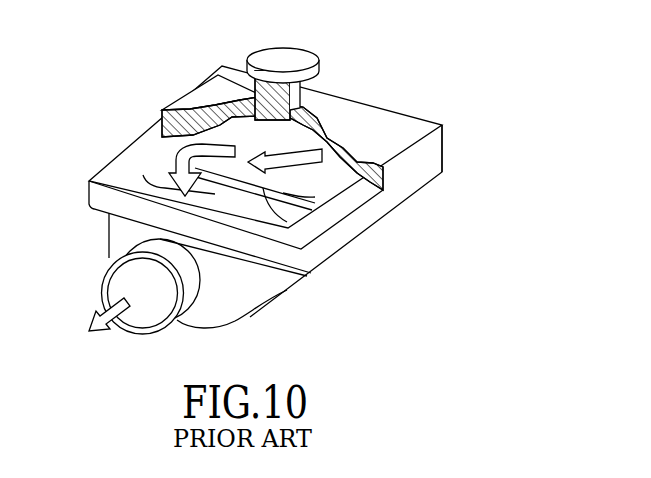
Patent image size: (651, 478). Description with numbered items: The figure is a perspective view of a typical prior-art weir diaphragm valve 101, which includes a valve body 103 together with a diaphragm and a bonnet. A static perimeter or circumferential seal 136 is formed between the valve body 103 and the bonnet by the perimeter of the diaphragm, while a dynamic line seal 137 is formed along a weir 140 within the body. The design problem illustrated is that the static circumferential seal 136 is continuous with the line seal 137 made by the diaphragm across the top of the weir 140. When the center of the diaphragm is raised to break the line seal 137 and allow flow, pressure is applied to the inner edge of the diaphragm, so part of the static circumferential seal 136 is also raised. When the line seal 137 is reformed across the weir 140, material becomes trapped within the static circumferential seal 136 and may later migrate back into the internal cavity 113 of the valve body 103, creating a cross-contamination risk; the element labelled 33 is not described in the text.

The weir diaphragm valve 101 is at (444, 86).
The static circumferential seal 136 is at (145, 150).
The cover plate 33 is at (393, 142).
The internal cavity 113 is at (197, 128).
The weir 140 is at (250, 214).
The dynamic line seal 137 is at (232, 230).
The valve body 103 is at (260, 283).